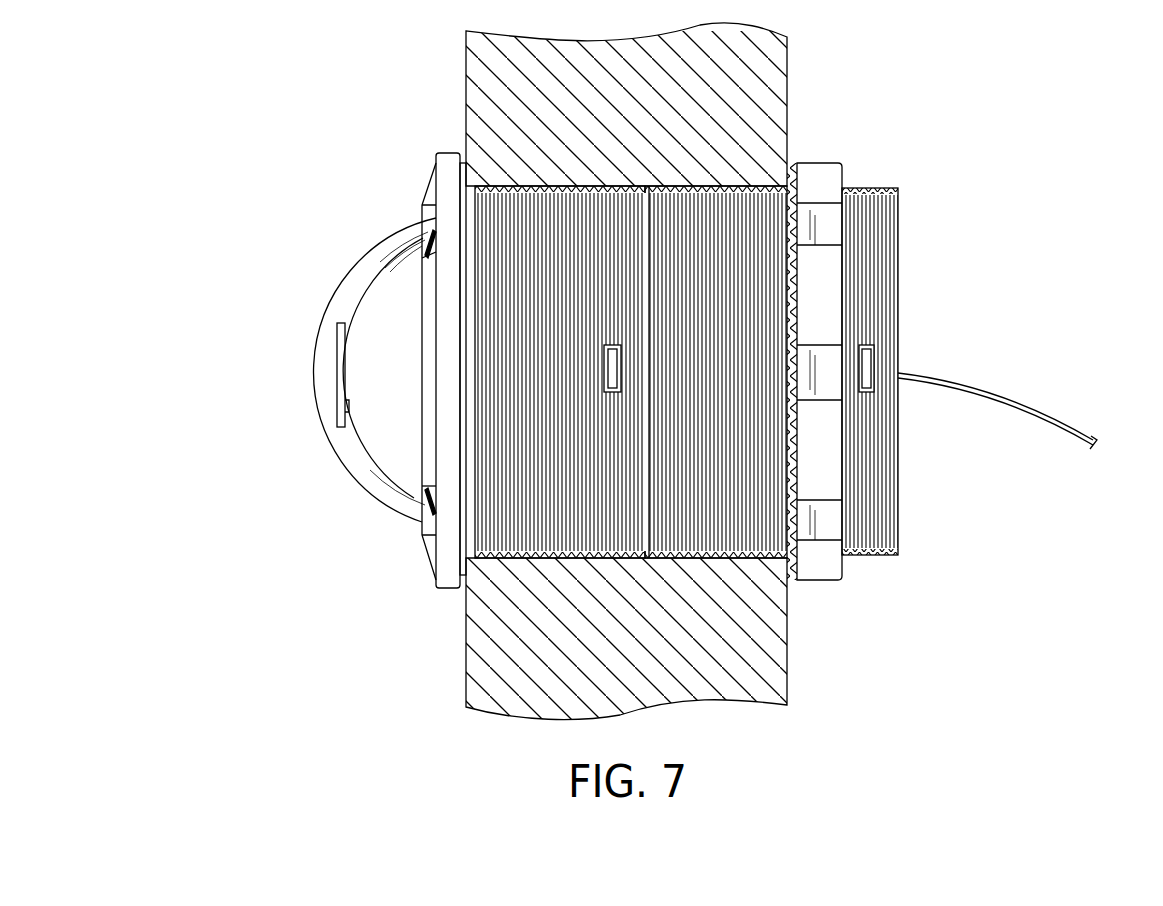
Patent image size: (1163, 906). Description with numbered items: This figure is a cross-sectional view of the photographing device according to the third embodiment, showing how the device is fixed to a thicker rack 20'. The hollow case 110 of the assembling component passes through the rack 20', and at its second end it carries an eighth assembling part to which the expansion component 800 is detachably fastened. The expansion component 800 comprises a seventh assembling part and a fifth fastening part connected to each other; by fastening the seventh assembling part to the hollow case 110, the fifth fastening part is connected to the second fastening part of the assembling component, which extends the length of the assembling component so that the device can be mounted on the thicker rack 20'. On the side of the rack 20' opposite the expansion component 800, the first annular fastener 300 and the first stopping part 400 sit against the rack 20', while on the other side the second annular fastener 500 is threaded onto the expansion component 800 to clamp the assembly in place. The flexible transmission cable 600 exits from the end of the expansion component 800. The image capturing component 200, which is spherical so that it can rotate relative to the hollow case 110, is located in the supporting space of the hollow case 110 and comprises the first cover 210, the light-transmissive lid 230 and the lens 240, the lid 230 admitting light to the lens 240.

The thicker rack 20' is at (593, 373).
The hollow case 110 is at (545, 195).
The expansion component 800 is at (717, 190).
The second annular fastener 500 is at (822, 593).
The flexible transmission cable 600 is at (1045, 400).
The first annular fastener 300 is at (422, 565).
The first stopping part 400 is at (465, 572).
The image capturing component 200 is at (358, 507).
The first cover 210 is at (375, 237).
The light-transmissive lid 230 is at (300, 350).
The lens 240 is at (340, 372).